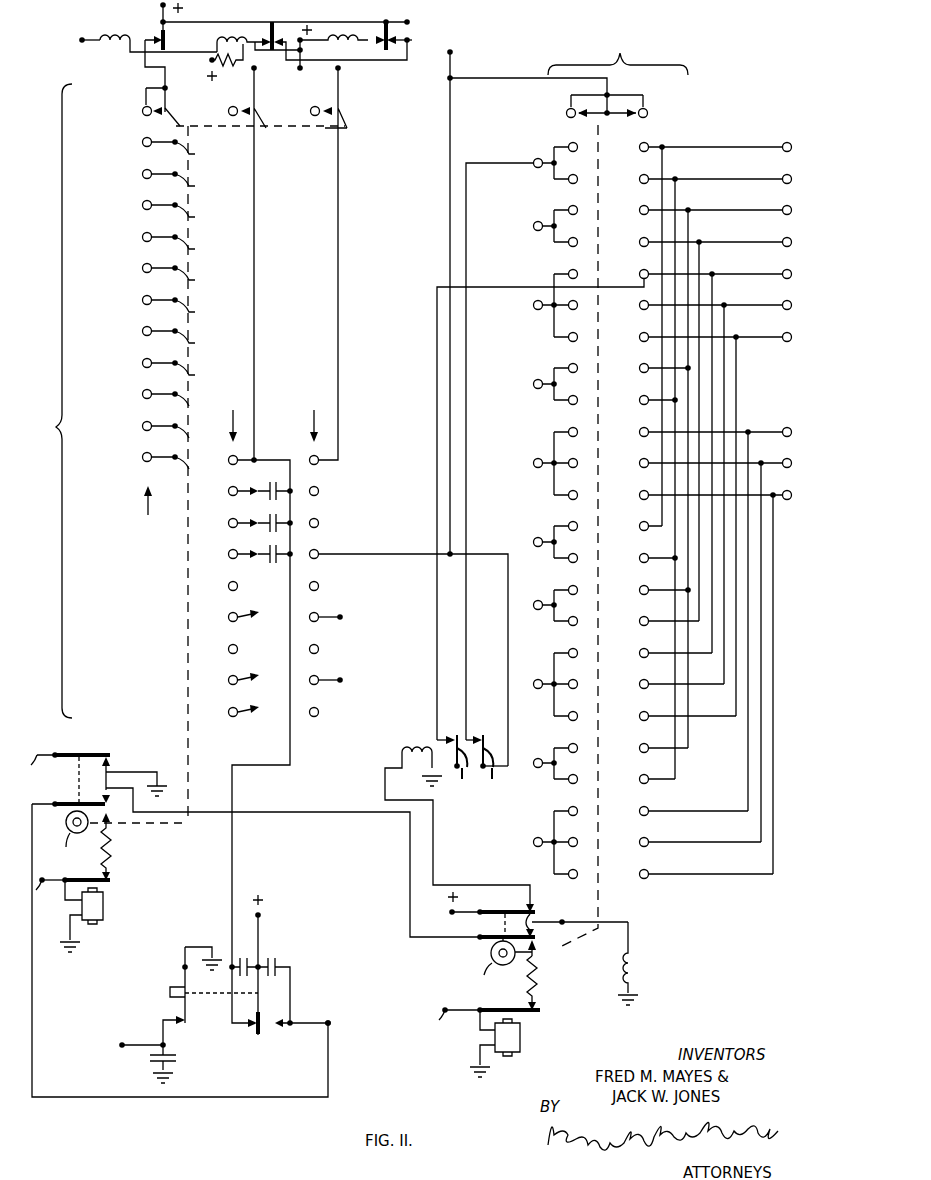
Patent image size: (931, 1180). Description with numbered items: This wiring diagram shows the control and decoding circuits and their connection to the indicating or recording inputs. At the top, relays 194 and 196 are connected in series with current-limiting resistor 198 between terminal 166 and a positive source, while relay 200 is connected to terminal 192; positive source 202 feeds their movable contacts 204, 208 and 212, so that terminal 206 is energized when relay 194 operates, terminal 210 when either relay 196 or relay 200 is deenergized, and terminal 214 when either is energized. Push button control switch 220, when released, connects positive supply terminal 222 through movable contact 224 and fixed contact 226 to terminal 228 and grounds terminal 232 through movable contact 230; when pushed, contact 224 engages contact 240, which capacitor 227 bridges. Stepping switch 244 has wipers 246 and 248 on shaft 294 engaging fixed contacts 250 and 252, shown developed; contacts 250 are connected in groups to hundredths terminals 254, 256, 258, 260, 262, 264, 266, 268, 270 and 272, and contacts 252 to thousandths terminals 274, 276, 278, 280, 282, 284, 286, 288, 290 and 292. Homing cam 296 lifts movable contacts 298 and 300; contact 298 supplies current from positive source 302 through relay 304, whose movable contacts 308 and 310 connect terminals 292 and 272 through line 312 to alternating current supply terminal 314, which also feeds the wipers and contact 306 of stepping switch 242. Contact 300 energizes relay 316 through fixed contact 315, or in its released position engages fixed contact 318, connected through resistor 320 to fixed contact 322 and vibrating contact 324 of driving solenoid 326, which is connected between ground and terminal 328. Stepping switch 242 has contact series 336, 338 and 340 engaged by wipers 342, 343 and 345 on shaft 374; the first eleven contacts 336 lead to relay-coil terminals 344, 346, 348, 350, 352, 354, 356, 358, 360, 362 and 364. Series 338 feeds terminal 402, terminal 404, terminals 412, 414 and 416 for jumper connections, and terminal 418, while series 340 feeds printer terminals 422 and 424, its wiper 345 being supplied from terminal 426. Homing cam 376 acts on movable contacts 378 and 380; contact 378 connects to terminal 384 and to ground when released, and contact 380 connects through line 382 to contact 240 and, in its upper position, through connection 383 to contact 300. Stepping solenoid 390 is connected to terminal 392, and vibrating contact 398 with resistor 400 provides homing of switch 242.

The terminal 166 is at (81, 38).
The terminal 192 is at (360, 18).
The relay 194 is at (126, 50).
The relay 196 is at (240, 40).
The current-limiting resistor 198 is at (232, 66).
The relay 200 is at (332, 37).
The positive potential source 202 is at (158, 8).
The movable contact 204 is at (166, 40).
The terminal 206 is at (167, 90).
The movable contact 208 is at (282, 14).
The terminal 210 is at (409, 20).
The movable contact 212 is at (412, 40).
The terminal 214 is at (300, 70).
The push button control switch 220 is at (178, 988).
The positive supply terminal 222 is at (266, 914).
The movable contact 224 is at (262, 1000).
The fixed contact 226 is at (258, 1026).
The capacitor 227 is at (278, 958).
The terminal 228 is at (230, 962).
The movable contact 230 is at (199, 1023).
The terminal 232 is at (120, 1044).
The contact 240 is at (278, 1026).
The stepping switch 242 is at (125, 453).
The stepping switch 244 is at (628, 490).
The wiper contact 246 is at (564, 112).
The wiper contact 248 is at (651, 106).
The fixed contacts 250 is at (592, 139).
The fixed contacts 252 is at (664, 139).
The terminal 254 is at (535, 846).
The terminal 256 is at (535, 767).
The terminal 258 is at (535, 688).
The terminal 260 is at (535, 609).
The terminal 262 is at (535, 546).
The terminal 264 is at (535, 467).
The terminal 266 is at (535, 388).
The terminal 268 is at (535, 309).
The terminal 270 is at (535, 230).
The terminal 272 is at (535, 167).
The terminal 274 is at (787, 500).
The terminal 276 is at (784, 342).
The terminal 278 is at (782, 184).
The terminal 280 is at (782, 247).
The terminal 282 is at (787, 468).
The terminal 284 is at (782, 310).
The terminal 286 is at (782, 152).
The terminal 288 is at (782, 215).
The terminal 290 is at (786, 437).
The terminal 292 is at (782, 279).
The shaft 294 is at (481, 977).
The homing cam 296 is at (492, 951).
The movable contact 298 is at (533, 908).
The movable contact 300 is at (538, 938).
The positive potential source 302 is at (452, 914).
The relay 304 is at (414, 746).
The contact 306 is at (320, 552).
The movable contact 308 is at (456, 769).
The movable contact 310 is at (489, 765).
The line 312 is at (448, 213).
The alternating current supply terminal 314 is at (453, 50).
The fixed contact 315 is at (527, 910).
The relay 316 is at (634, 965).
The fixed contact 318 is at (535, 956).
The resistor 320 is at (538, 988).
The fixed contact 322 is at (542, 1008).
The vibrating contact 324 is at (524, 1018).
The driving solenoid 326 is at (522, 1044).
The terminal 328 is at (439, 1023).
The series of contacts 336 is at (146, 512).
The series of contacts 338 is at (253, 703).
The series of contacts 340 is at (311, 549).
The wiper 342 is at (140, 117).
The wiper 343 is at (250, 130).
The terminal 344 is at (184, 155).
The wiper 345 is at (328, 132).
The terminal 346 is at (184, 184).
The terminal 348 is at (184, 215).
The terminal 350 is at (184, 247).
The terminal 352 is at (184, 278).
The terminal 354 is at (184, 310).
The terminal 356 is at (184, 341).
The terminal 358 is at (184, 373).
The terminal 360 is at (183, 405).
The terminal 362 is at (183, 436).
The terminal 364 is at (192, 470).
The shaft 374 is at (59, 848).
The homing cam 376 is at (66, 824).
The movable contact 378 is at (84, 754).
The movable contact 380 is at (81, 782).
The line 382 is at (33, 1010).
The connection 383 is at (275, 812).
The terminal 384 is at (38, 745).
The stepping solenoid 390 is at (105, 908).
The terminal 392 is at (44, 896).
The vibrating contact 398 is at (112, 882).
The resistor 400 is at (112, 842).
The terminal 402 is at (250, 496).
The terminal 404 is at (250, 528).
The terminal 412 is at (252, 558).
The terminal 414 is at (256, 618).
The terminal 416 is at (254, 682).
The terminal 418 is at (256, 712).
The terminal 422 is at (341, 619).
The terminal 424 is at (341, 682).
The terminal 426 is at (341, 67).